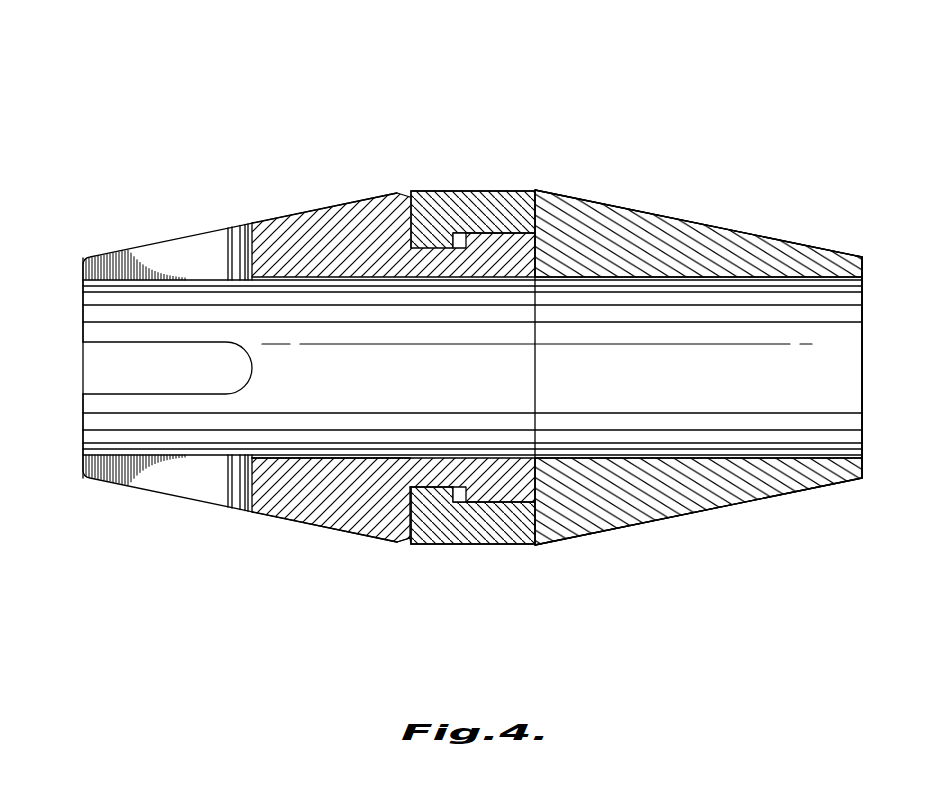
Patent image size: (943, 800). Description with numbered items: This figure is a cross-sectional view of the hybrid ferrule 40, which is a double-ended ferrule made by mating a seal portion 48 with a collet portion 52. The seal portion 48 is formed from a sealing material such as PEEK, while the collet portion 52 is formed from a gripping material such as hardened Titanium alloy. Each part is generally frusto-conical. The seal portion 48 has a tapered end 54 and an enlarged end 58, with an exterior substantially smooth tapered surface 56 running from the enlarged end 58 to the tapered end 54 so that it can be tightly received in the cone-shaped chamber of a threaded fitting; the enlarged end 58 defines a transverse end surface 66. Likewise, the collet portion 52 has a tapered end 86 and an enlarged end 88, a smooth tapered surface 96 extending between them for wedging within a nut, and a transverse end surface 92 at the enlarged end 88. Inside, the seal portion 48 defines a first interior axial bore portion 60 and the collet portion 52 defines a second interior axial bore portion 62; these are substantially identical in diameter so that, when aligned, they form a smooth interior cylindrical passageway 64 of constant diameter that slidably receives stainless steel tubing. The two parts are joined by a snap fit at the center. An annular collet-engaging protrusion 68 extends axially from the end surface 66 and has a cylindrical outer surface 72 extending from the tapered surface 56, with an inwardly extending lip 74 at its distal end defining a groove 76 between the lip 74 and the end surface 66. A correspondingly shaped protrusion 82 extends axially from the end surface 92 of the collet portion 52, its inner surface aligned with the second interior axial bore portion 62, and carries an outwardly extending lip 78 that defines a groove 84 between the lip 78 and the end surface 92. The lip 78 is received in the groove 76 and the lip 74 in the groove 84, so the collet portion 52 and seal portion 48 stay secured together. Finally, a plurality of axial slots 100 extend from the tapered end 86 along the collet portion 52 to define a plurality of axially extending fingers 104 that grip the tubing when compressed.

The hybrid ferrule 40 is at (285, 101).
The seal portion 48 is at (732, 204).
The collet portion 52 is at (288, 211).
The tapered end 54 is at (837, 266).
The tapered surface 56 is at (680, 218).
The enlarged end 58 is at (607, 207).
The first interior axial bore portion 60 is at (802, 462).
The second interior axial bore portion 62 is at (378, 453).
The interior cylindrical passageway 64 is at (806, 364).
The transverse end surface 66 is at (553, 230).
The annular collet-engaging protrusion 68 is at (456, 206).
The cylindrical outer surface 72 is at (466, 191).
The lip 74 is at (430, 242).
The groove 76 is at (487, 232).
The lip 78 is at (522, 246).
The protrusion 82 is at (452, 472).
The groove 84 is at (415, 486).
The tapered end 86 is at (158, 250).
The enlarged end 88 is at (380, 503).
The transverse end surface 92 is at (407, 519).
The tapered surface 96 is at (330, 205).
The axial slots 100 is at (116, 370).
The axially extending fingers 104 is at (94, 312).